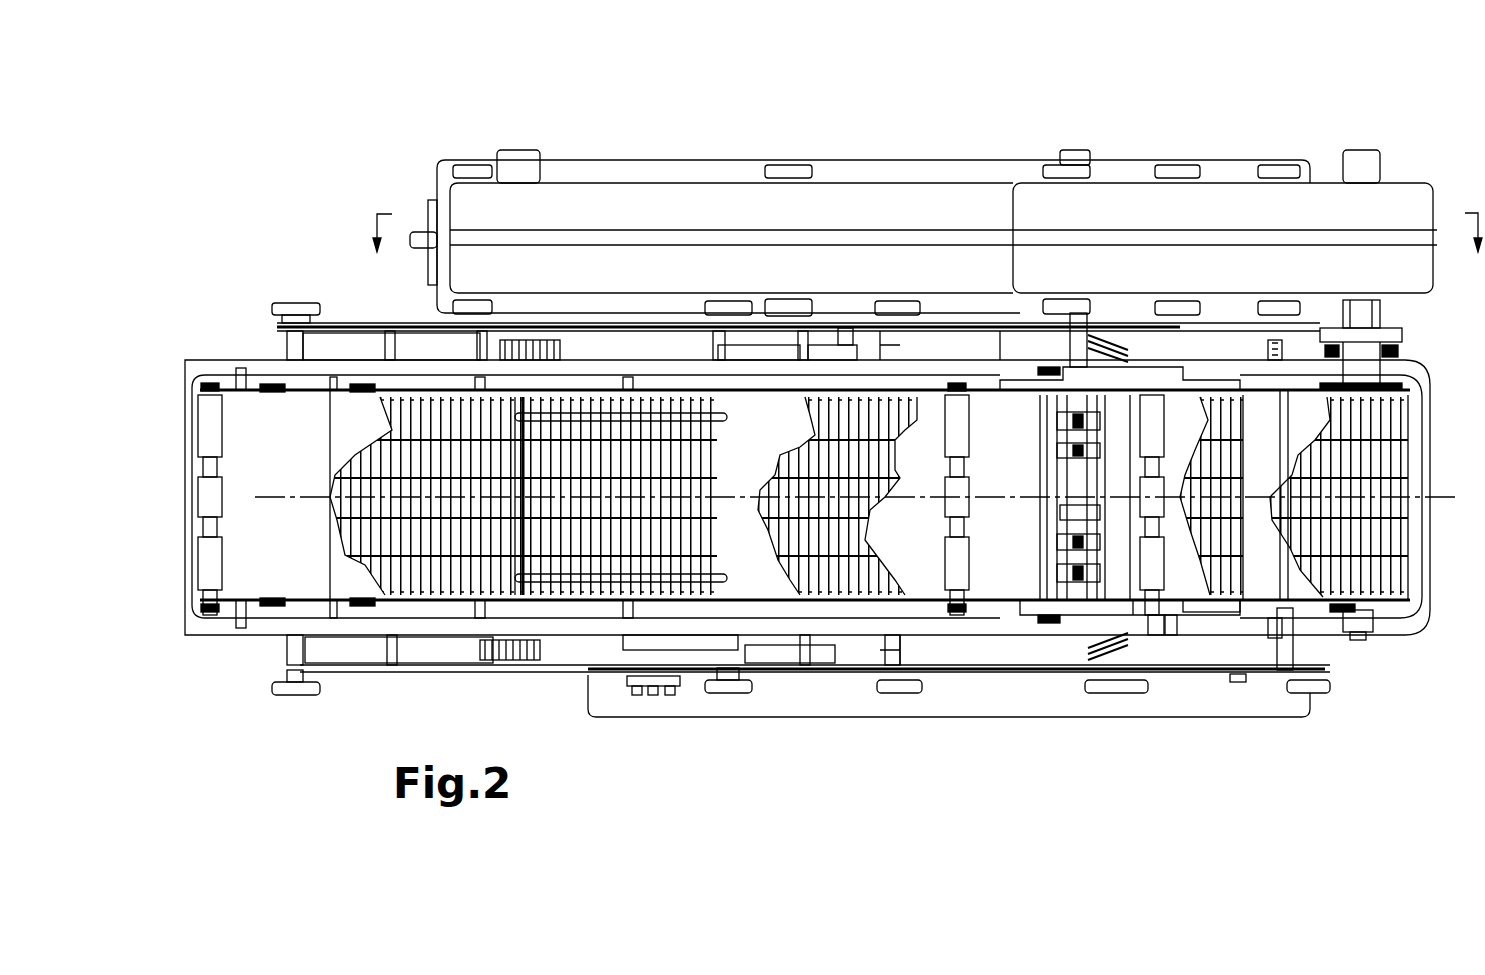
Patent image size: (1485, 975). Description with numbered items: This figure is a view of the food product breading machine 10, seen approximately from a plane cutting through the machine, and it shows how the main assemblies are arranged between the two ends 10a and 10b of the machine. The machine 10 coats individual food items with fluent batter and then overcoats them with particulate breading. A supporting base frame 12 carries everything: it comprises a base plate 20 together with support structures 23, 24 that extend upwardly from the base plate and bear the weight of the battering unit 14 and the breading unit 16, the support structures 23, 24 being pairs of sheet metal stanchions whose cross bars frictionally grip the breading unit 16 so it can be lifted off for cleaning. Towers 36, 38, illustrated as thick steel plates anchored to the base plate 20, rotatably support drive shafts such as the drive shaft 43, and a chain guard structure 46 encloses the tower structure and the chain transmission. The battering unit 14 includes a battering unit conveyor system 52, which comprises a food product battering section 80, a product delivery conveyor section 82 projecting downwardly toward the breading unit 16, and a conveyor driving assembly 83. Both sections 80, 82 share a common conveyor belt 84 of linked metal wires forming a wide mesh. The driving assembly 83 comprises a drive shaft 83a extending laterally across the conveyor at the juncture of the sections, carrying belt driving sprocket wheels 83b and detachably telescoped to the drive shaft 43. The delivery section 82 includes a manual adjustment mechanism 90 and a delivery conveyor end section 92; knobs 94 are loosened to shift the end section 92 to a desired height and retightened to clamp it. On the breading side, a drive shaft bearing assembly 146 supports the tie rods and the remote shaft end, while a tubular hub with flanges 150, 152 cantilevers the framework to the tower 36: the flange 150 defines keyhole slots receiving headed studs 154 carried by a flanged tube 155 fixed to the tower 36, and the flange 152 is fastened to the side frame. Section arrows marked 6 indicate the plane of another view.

The food product breading machine 10 is at (533, 115).
The first end of apparatus 10a is at (185, 402).
The second end of apparatus 10b is at (1430, 523).
The supporting base frame 12 is at (1007, 712).
The battering unit 14 is at (752, 578).
The breading unit 16 is at (1166, 618).
The base plate 20 is at (850, 700).
The support structure 23 is at (653, 700).
The support structure 24 is at (1238, 682).
The tower 36 is at (1130, 220).
The tower 38 is at (555, 218).
The drive shaft 43 is at (1088, 305).
The chain guard structure 46 is at (1290, 221).
The battering unit conveyor system 52 is at (370, 540).
The food product battering section 80 is at (870, 588).
The product delivery conveyor section 82 is at (1183, 605).
The conveyor driving assembly 83 is at (1050, 486).
The drive shaft 83a is at (1070, 512).
The belt driving sprocket wheels 83b is at (1058, 422).
The conveyor belt 84 is at (430, 447).
The manual adjustment mechanism 90 is at (1156, 628).
The delivery conveyor end section 92 is at (1181, 620).
The knobs 94 is at (1125, 347).
The drive shaft bearing assembly 146 is at (1372, 610).
The flange 150 is at (1400, 338).
The flange 152 is at (1400, 386).
The headed studs 154 is at (1355, 345).
The flanged tube 155 is at (1365, 316).
The section line 6- 6 is at (926, 247).